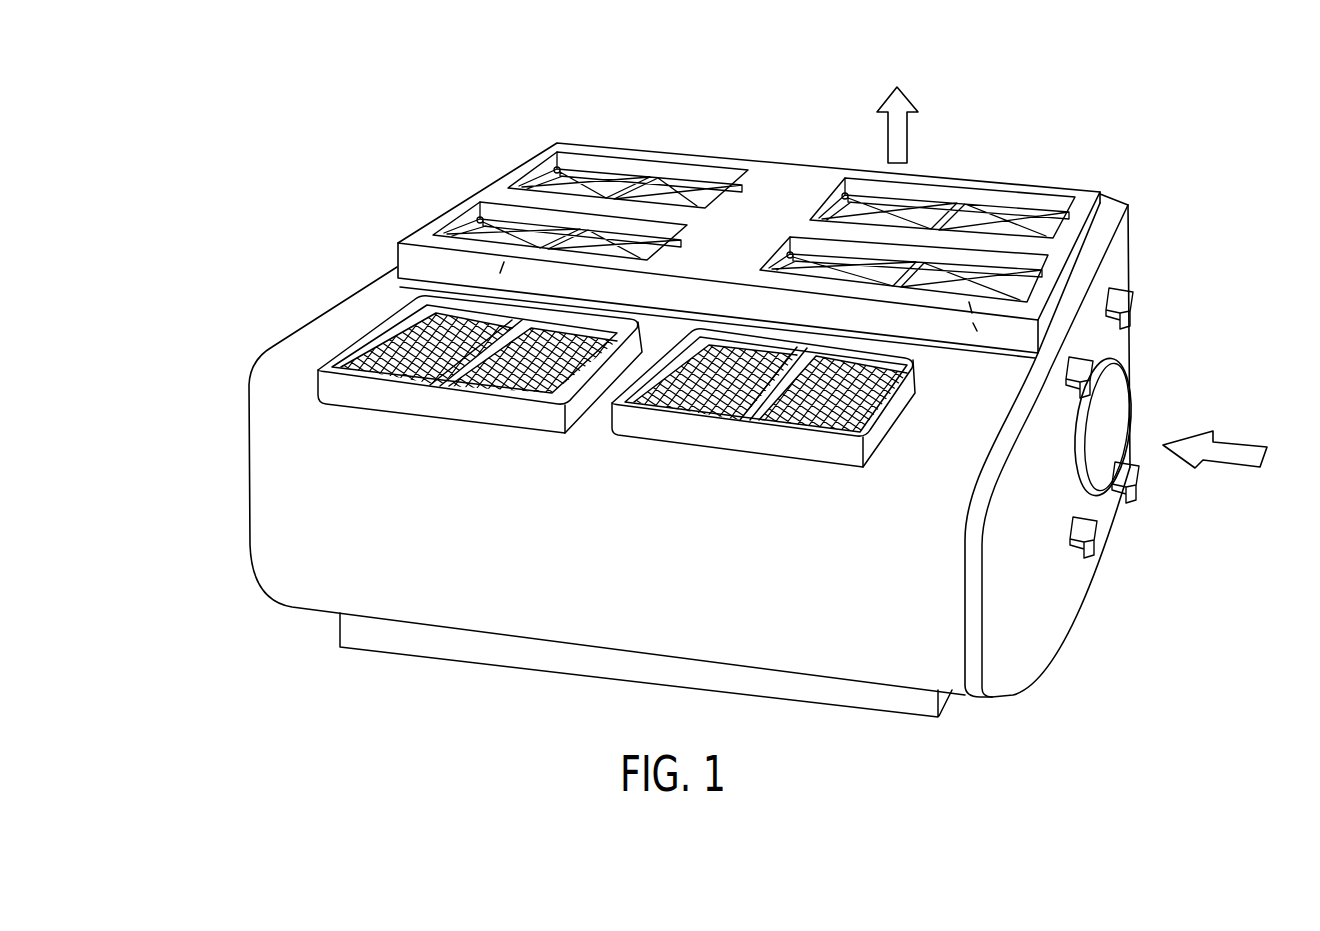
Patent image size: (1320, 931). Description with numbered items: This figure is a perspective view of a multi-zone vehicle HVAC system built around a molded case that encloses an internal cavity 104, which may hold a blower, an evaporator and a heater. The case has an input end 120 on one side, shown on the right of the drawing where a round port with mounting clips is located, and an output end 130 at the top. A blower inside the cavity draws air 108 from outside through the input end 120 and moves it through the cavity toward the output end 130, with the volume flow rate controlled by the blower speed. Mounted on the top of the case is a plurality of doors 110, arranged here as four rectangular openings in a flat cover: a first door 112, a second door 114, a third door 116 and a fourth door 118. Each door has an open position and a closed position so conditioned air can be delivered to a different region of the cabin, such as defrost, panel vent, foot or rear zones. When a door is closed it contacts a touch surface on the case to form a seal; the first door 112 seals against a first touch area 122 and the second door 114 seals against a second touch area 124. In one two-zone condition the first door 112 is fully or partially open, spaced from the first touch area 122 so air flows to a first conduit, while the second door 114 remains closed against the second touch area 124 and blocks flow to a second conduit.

The internal cavity 104 is at (330, 448).
The air 108 is at (1228, 465).
The plurality of doors 110 is at (553, 128).
The first door 112 is at (470, 232).
The second door 114 is at (842, 273).
The third door 116 is at (590, 183).
The fourth door 118 is at (1002, 222).
The input end 120 is at (1103, 410).
The first touch area 122 is at (507, 255).
The second touch area 124 is at (975, 298).
The output end 130 is at (890, 138).